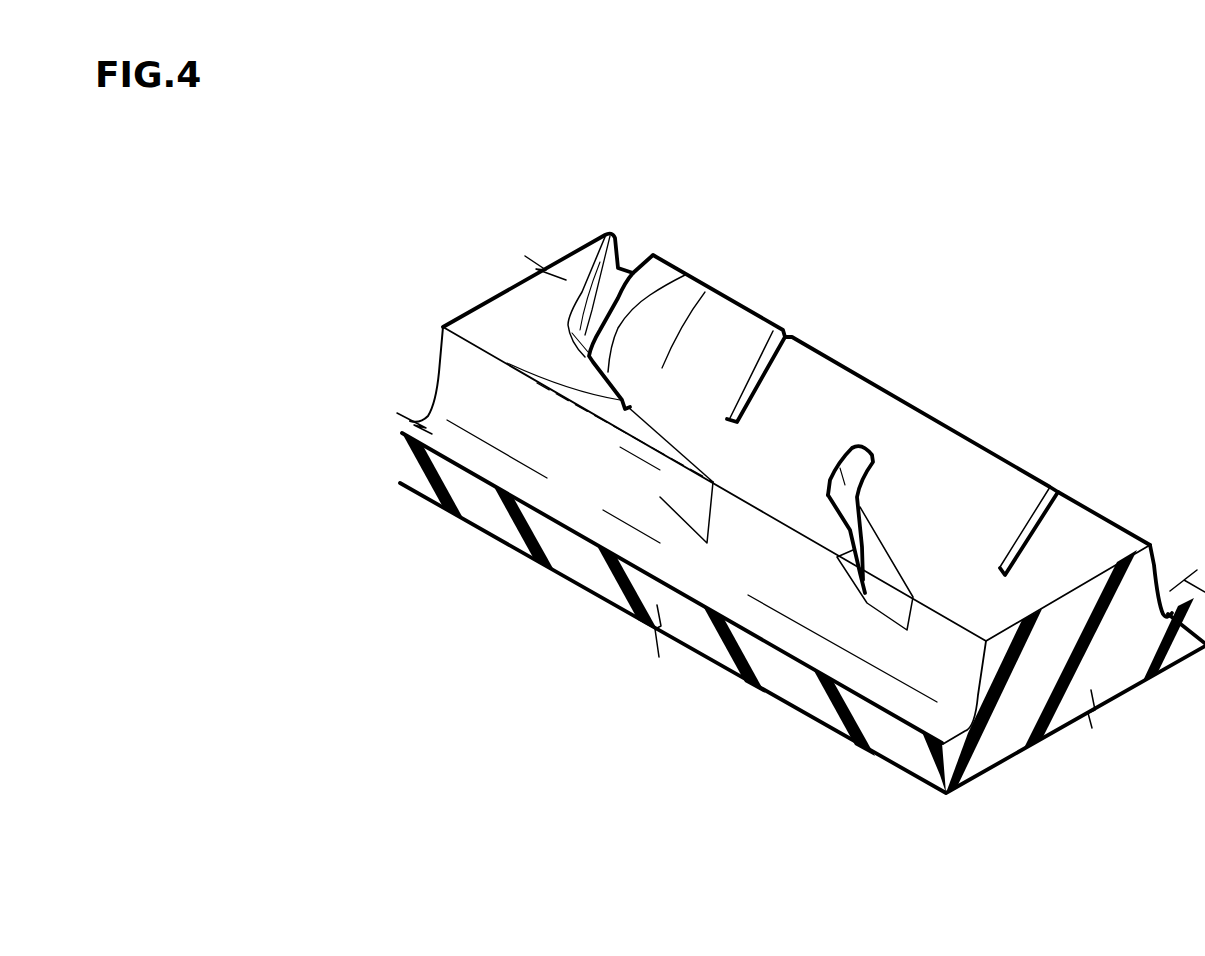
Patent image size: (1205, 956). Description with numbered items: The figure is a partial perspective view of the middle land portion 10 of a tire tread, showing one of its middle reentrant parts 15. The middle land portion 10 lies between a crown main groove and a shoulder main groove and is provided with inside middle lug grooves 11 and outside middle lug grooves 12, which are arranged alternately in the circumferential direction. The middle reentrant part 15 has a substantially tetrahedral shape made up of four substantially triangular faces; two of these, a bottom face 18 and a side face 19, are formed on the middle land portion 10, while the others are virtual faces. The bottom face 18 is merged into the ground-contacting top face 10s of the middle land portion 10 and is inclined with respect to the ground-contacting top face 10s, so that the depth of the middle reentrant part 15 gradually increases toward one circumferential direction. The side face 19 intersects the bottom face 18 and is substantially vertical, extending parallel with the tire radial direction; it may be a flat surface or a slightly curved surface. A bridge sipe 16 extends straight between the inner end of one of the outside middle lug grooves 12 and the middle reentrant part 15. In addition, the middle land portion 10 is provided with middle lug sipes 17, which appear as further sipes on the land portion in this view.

The middle land portion 10 is at (535, 300).
The ground-contacting top face 10s is at (503, 327).
The inside middle lug groove 11 is at (849, 490).
The outside middle lug groove 12 is at (596, 295).
The middle reentrant part 15 is at (643, 424).
The bridge sipe 16 is at (641, 428).
The middle lug sipe 17 is at (760, 365).
The bottom face 18 is at (640, 453).
The side face 19 is at (705, 493).